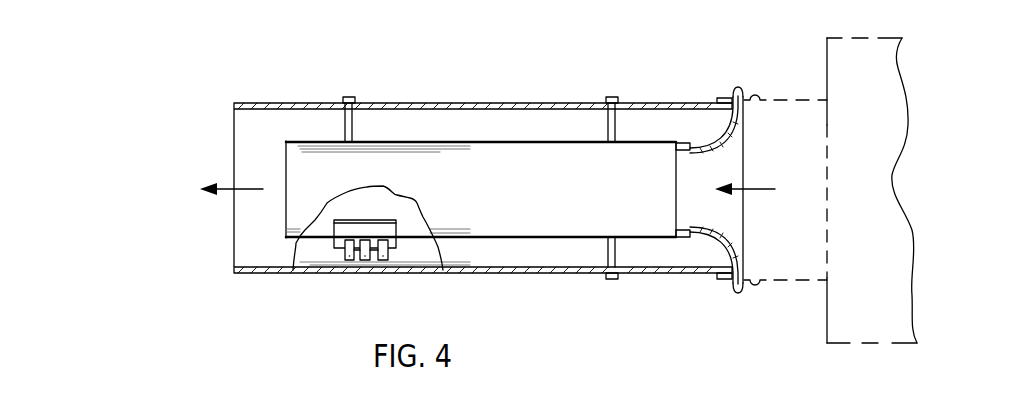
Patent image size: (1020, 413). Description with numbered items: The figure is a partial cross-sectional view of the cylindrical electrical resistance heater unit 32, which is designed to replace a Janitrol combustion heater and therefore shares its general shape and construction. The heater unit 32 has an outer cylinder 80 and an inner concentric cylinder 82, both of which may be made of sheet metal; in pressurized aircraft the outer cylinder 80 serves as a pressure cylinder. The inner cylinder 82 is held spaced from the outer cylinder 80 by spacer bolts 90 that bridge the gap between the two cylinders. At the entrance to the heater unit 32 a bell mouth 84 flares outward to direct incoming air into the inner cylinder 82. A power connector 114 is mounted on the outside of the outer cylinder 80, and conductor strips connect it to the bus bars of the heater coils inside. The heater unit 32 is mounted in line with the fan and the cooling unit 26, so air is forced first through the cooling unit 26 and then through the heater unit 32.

The cooling unit 26 is at (845, 325).
The heater unit 32 is at (488, 189).
The outer cylinder 80 is at (497, 97).
The inner concentric cylinder 82 is at (556, 201).
The bell mouth 84 is at (712, 206).
The spacer bolts 90 is at (358, 113).
The power connector 114 is at (381, 232).